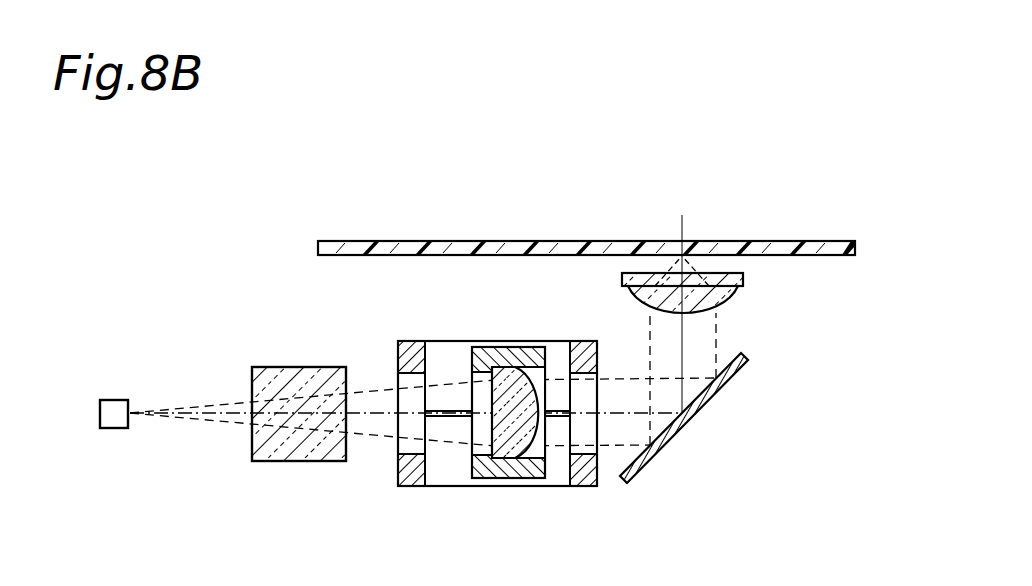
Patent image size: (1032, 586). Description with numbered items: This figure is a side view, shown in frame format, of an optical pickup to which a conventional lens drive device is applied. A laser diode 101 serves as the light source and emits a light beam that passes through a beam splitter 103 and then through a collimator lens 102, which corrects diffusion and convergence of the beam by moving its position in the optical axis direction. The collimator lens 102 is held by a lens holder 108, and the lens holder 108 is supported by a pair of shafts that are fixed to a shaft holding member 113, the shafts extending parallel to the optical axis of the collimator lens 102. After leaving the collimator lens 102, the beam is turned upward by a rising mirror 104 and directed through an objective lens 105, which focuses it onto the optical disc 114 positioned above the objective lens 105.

The laser diode 101 is at (116, 398).
The collimator lens 102 is at (508, 370).
The beam splitter 103 is at (268, 456).
The rising mirror 104 is at (746, 360).
The objective lens 105 is at (732, 297).
The lens holder 108 is at (494, 479).
The shaft holding member 113 is at (411, 352).
The optical disc 114 is at (832, 240).